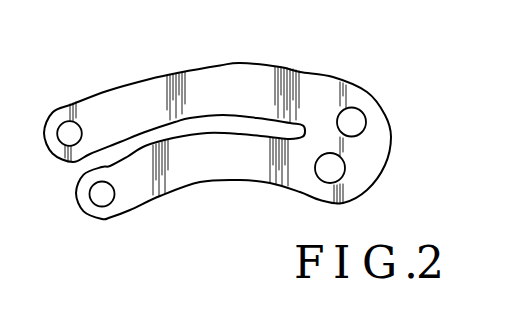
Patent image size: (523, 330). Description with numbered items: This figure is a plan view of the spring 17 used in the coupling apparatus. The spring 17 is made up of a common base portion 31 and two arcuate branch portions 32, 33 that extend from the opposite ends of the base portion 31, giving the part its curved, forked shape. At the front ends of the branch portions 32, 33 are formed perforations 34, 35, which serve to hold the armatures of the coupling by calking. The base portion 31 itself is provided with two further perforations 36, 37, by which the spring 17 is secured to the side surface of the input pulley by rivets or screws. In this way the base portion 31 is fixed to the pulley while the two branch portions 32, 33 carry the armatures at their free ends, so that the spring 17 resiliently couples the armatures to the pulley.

The spring 17 is at (308, 69).
The common base portion 31 is at (388, 118).
The branch portion 32 is at (222, 64).
The branch portion 33 is at (230, 184).
The perforation 34 is at (75, 131).
The perforation 35 is at (105, 191).
The perforation 36 is at (344, 123).
The perforation 37 is at (327, 166).